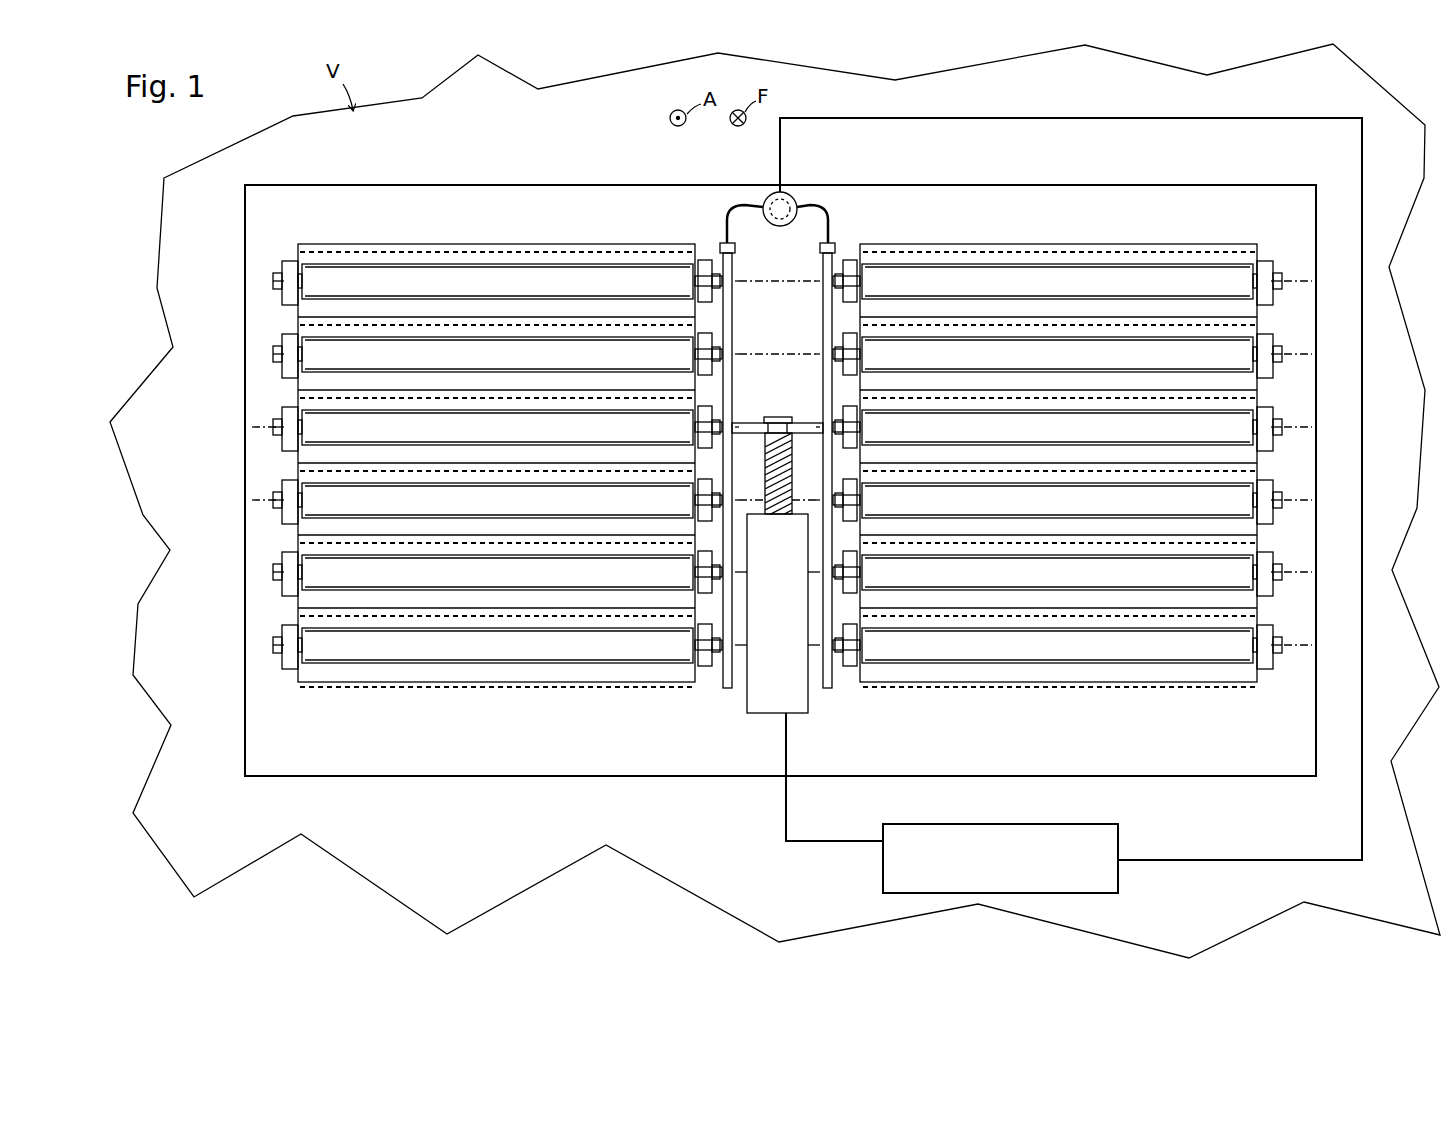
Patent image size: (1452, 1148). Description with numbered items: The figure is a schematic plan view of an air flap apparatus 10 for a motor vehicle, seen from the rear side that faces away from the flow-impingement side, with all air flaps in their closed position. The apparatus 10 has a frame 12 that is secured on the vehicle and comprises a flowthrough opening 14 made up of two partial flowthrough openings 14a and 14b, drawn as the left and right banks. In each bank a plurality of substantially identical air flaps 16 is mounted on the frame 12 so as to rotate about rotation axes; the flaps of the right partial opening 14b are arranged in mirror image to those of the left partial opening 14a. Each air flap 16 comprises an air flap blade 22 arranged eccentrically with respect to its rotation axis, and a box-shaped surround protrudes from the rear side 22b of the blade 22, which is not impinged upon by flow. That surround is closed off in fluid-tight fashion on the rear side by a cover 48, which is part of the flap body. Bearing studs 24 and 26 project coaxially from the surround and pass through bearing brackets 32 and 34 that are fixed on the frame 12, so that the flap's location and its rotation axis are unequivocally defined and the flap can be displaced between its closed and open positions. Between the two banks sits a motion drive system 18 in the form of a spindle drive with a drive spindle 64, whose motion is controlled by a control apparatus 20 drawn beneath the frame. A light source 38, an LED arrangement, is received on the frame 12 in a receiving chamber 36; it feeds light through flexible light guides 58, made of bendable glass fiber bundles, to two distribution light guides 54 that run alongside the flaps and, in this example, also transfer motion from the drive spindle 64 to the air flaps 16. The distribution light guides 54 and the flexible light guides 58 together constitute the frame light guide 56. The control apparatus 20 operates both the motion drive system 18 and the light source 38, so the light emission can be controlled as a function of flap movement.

The air flap apparatus 10 is at (505, 150).
The frame 12 is at (246, 770).
The flowthrough opening 14 is at (613, 210).
The partial flowthrough opening 14a is at (396, 242).
The partial flowthrough opening 14b is at (1012, 242).
The air flap 16 is at (508, 246).
The motion drive system 18 is at (792, 656).
The control apparatus 20 is at (1012, 866).
The air flap blade 22 is at (660, 246).
The rear side of air flap blade 22b is at (318, 258).
The bearing stud 24 is at (278, 274).
The bearing stud 26 is at (721, 250).
The bearing bracket 32 is at (290, 378).
The bearing bracket 34 is at (848, 296).
The receiving chamber 36 is at (781, 227).
The light source 38 is at (790, 200).
The cover 48 is at (508, 365).
The distribution light guide 54 is at (825, 385).
The frame light guide 56 is at (742, 194).
The flexible light guide 58 is at (838, 208).
The threaded spindle 64 is at (788, 470).